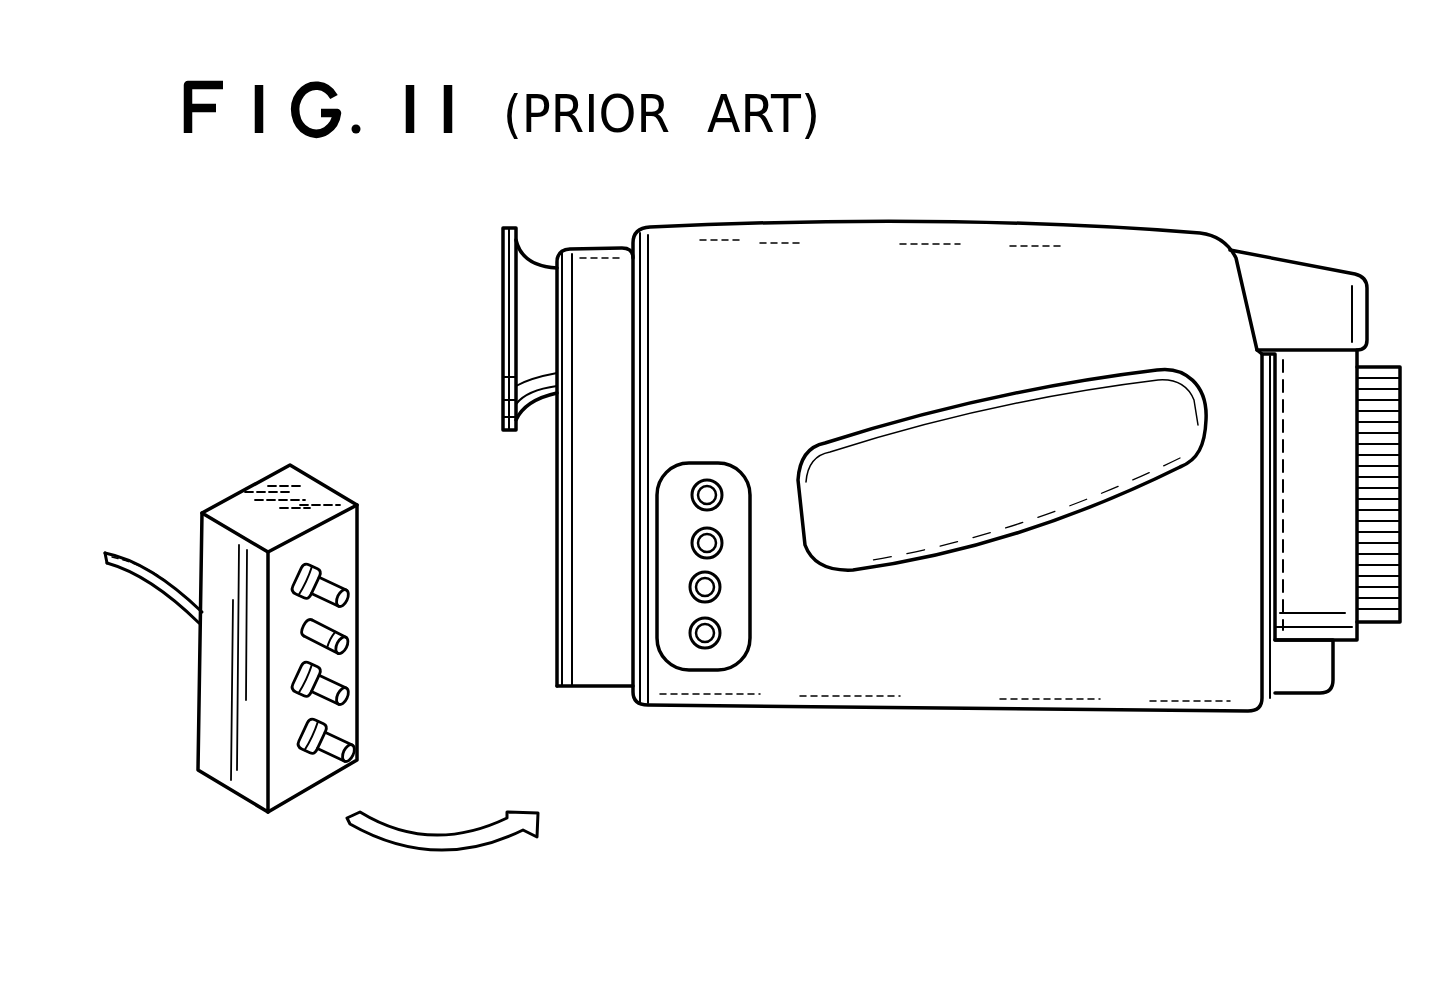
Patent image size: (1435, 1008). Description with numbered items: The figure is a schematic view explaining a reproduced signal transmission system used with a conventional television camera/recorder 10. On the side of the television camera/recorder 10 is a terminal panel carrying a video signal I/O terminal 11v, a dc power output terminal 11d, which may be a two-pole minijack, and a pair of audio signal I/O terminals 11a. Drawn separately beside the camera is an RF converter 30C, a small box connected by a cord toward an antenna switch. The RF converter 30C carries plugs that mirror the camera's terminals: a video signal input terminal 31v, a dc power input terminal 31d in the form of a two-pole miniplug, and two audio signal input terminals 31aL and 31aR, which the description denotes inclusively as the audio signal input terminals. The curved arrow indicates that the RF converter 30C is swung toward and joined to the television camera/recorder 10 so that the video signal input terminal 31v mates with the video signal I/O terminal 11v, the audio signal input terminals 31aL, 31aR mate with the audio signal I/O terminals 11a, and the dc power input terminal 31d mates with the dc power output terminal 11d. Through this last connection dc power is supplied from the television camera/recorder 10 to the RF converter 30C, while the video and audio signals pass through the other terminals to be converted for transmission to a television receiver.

The television camera/recorder 10 is at (958, 210).
The video signal I/O terminal 11v is at (711, 478).
The dc power output terminal 11d is at (723, 543).
The audio signal I/O terminals 11a is at (721, 594).
The RF converter 30C is at (237, 787).
The video signal input terminal 31v is at (348, 585).
The dc power input terminal 31d is at (348, 643).
The audio signal input terminal 31aL is at (348, 694).
The audio signal input terminal 31aR is at (350, 748).